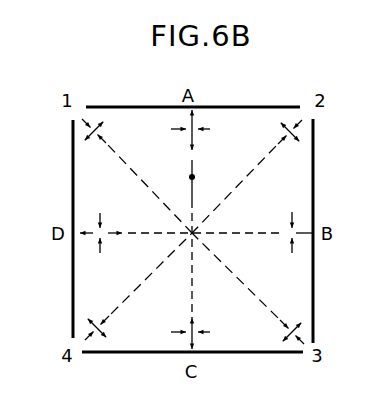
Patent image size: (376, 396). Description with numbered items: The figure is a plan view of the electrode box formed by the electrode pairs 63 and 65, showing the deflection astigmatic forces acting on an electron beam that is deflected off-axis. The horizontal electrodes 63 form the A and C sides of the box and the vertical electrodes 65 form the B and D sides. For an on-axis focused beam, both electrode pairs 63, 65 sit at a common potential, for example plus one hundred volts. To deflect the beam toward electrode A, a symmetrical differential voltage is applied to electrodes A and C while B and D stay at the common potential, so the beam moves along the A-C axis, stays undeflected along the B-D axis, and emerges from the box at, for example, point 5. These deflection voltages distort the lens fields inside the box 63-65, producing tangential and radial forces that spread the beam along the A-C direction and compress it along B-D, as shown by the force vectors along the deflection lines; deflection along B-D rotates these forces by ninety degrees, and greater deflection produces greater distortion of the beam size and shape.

The point 5 is at (200, 177).
The electrode pair 63 is at (233, 105).
The electrode pair 65 is at (72, 188).